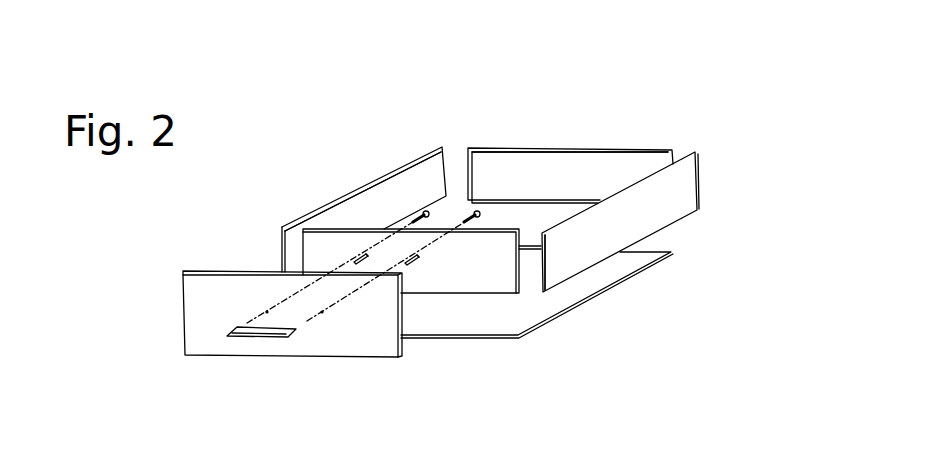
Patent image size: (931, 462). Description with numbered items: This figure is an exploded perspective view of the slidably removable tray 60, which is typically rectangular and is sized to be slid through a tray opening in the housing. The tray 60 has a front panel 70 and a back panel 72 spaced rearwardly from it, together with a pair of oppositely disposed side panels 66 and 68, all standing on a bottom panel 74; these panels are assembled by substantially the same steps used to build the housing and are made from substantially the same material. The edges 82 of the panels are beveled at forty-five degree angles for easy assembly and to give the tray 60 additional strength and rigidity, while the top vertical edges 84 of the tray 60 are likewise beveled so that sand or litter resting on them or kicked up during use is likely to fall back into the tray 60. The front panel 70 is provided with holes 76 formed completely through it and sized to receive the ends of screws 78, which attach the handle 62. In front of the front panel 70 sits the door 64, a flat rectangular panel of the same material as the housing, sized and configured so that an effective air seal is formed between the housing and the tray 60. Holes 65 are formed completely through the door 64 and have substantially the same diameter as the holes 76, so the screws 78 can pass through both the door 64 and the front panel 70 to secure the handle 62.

The tray 60 is at (627, 128).
The handle 62 is at (246, 336).
The door 64 is at (202, 311).
The holes 65 is at (322, 312).
The side panel 66 is at (375, 203).
The side panel 68 is at (620, 223).
The front panel 70 is at (473, 267).
The back panel 72 is at (567, 170).
The bottom panel 74 is at (522, 308).
The holes 76 is at (367, 253).
The screws 78 is at (355, 259).
The beveled edges 82 is at (440, 205).
The top vertical edges 84 is at (421, 156).